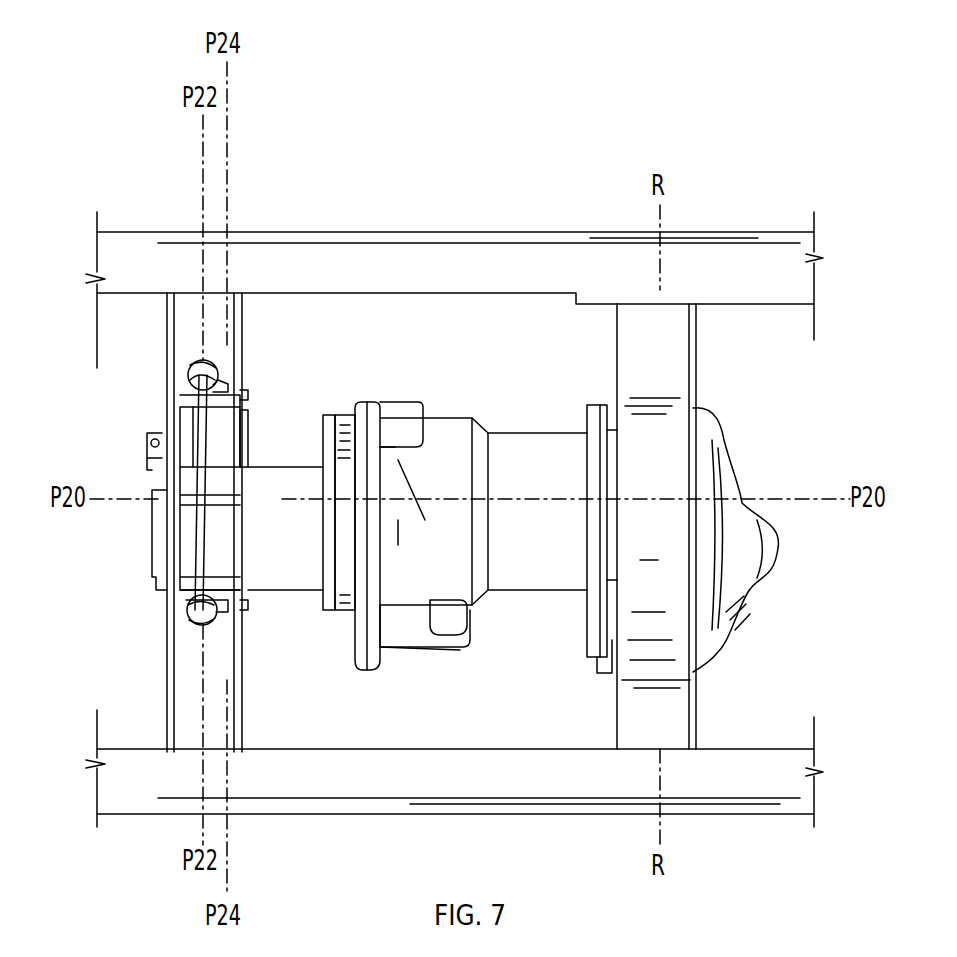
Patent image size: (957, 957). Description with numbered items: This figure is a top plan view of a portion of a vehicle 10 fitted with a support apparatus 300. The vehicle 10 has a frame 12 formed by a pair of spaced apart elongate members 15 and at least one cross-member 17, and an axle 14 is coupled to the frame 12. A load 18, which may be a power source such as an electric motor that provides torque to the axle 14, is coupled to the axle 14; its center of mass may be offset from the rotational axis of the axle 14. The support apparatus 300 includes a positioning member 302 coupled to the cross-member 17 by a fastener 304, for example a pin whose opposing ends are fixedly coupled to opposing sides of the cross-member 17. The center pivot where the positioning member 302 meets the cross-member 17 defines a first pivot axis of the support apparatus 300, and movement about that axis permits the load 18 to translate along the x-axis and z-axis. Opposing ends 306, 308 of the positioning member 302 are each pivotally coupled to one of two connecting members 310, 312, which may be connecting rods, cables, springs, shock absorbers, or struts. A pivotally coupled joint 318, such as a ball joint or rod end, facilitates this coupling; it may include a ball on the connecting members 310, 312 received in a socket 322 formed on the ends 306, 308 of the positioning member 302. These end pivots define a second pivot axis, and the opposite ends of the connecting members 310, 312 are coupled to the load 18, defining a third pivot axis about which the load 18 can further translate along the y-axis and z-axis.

The vehicle 10 is at (138, 113).
The frame 12 is at (428, 232).
The axle 14 is at (664, 713).
The elongate members 15 is at (495, 262).
The cross-member 17 is at (244, 307).
The load 18 is at (523, 433).
The support apparatus 300 is at (187, 520).
The positioning member 302 is at (195, 392).
The fastener 304 is at (183, 493).
The end of positioning member 306 is at (190, 602).
The end of positioning member 308 is at (197, 377).
The connecting member 310 is at (220, 616).
The connecting member 312 is at (218, 380).
The pivotally coupled joint 318 is at (203, 358).
The socket 322 is at (205, 368).